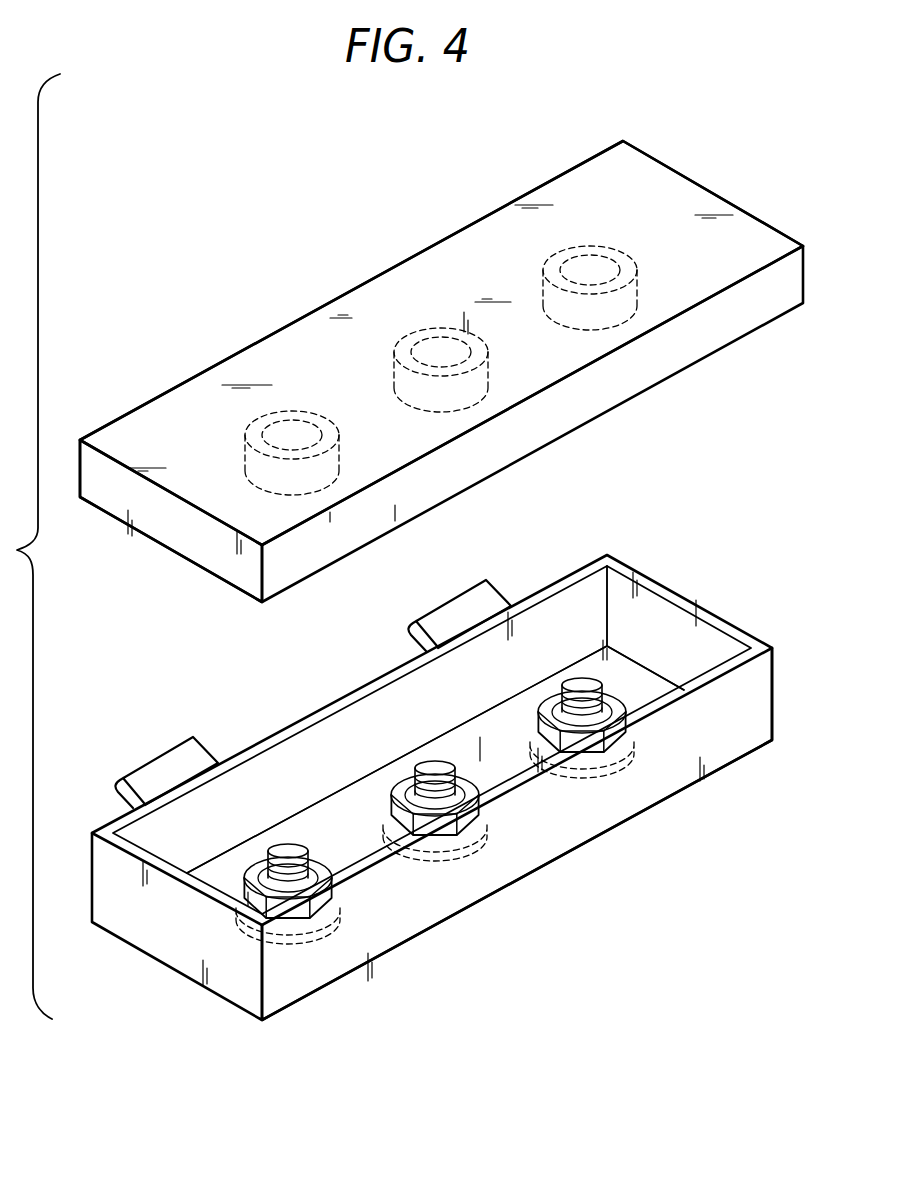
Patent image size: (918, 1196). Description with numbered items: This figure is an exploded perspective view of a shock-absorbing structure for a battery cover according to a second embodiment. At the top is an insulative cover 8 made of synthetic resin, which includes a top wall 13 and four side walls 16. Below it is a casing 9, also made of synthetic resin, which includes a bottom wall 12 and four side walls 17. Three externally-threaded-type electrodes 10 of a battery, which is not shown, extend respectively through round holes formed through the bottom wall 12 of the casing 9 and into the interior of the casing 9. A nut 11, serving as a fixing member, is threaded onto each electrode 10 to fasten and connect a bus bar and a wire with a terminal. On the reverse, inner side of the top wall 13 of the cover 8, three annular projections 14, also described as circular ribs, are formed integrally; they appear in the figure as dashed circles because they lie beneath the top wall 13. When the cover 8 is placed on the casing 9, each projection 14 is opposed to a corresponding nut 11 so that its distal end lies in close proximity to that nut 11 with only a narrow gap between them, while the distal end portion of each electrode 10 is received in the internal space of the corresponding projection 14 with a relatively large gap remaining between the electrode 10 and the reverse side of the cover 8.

The insulative cover 8 is at (290, 296).
The casing 9 is at (250, 707).
The externally-threaded-type electrode 10 is at (582, 684).
The nut 11 is at (543, 725).
The bottom wall 12 is at (345, 845).
The top wall 13 is at (473, 242).
The annular projection 14 is at (604, 248).
The side wall 16 is at (178, 534).
The side wall 17 is at (545, 836).